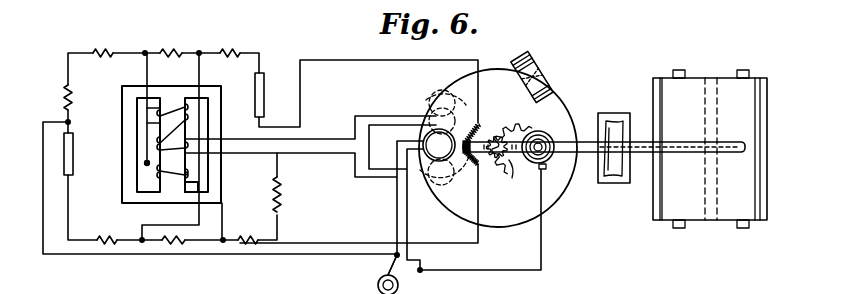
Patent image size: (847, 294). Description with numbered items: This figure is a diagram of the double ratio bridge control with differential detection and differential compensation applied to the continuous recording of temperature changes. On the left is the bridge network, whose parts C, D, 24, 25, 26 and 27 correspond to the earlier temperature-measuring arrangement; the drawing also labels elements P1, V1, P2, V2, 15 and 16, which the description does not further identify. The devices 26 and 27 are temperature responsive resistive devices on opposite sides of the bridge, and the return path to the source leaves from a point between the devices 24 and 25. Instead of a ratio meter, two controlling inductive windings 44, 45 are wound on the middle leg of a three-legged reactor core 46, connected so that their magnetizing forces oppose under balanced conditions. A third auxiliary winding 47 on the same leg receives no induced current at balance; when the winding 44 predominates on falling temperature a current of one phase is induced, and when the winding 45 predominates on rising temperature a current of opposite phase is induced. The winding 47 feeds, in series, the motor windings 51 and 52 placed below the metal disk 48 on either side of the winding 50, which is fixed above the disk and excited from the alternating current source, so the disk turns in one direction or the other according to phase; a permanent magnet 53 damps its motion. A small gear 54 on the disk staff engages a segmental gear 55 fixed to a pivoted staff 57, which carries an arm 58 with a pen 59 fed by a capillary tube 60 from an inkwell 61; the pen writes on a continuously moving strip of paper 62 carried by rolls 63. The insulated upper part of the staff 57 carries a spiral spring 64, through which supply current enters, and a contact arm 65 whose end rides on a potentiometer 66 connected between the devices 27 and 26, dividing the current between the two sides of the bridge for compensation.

The potentiometer resistor P1 is at (103, 44).
The bridge network part C is at (171, 43).
The resistor V1 is at (233, 44).
The potentiometer resistor P2 is at (110, 231).
The bridge network part D is at (175, 248).
The resistor V2 is at (249, 231).
The bridge device 24 is at (78, 97).
The bridge device 25 is at (75, 152).
The temperature responsive resistive device 26 is at (273, 191).
The temperature responsive resistive device 27 is at (265, 108).
The controlling inductive winding 44 is at (163, 108).
The controlling inductive winding 45 is at (190, 175).
The reactor core 46 is at (219, 124).
The auxiliary winding 47 is at (147, 163).
The metal disk 48 is at (550, 195).
The motor winding 50 is at (439, 145).
The motor winding 51 is at (447, 106).
The motor winding 52 is at (450, 183).
The permanent magnet 53 is at (553, 62).
The small gear 54 is at (493, 160).
The segmental gear 55 is at (518, 172).
The pivoted staff 57 is at (542, 131).
The arm 58 is at (584, 152).
The pen 59 is at (744, 142).
The capillary tube 60 is at (631, 165).
The inkwell 61 is at (617, 110).
The strip of paper 62 is at (710, 221).
The rolls 63 is at (707, 196).
The spiral spring 64 is at (553, 130).
The contact arm 65 is at (474, 165).
The potentiometer 66 is at (483, 128).
The lead 15 is at (395, 258).
The lamp 16 is at (400, 285).